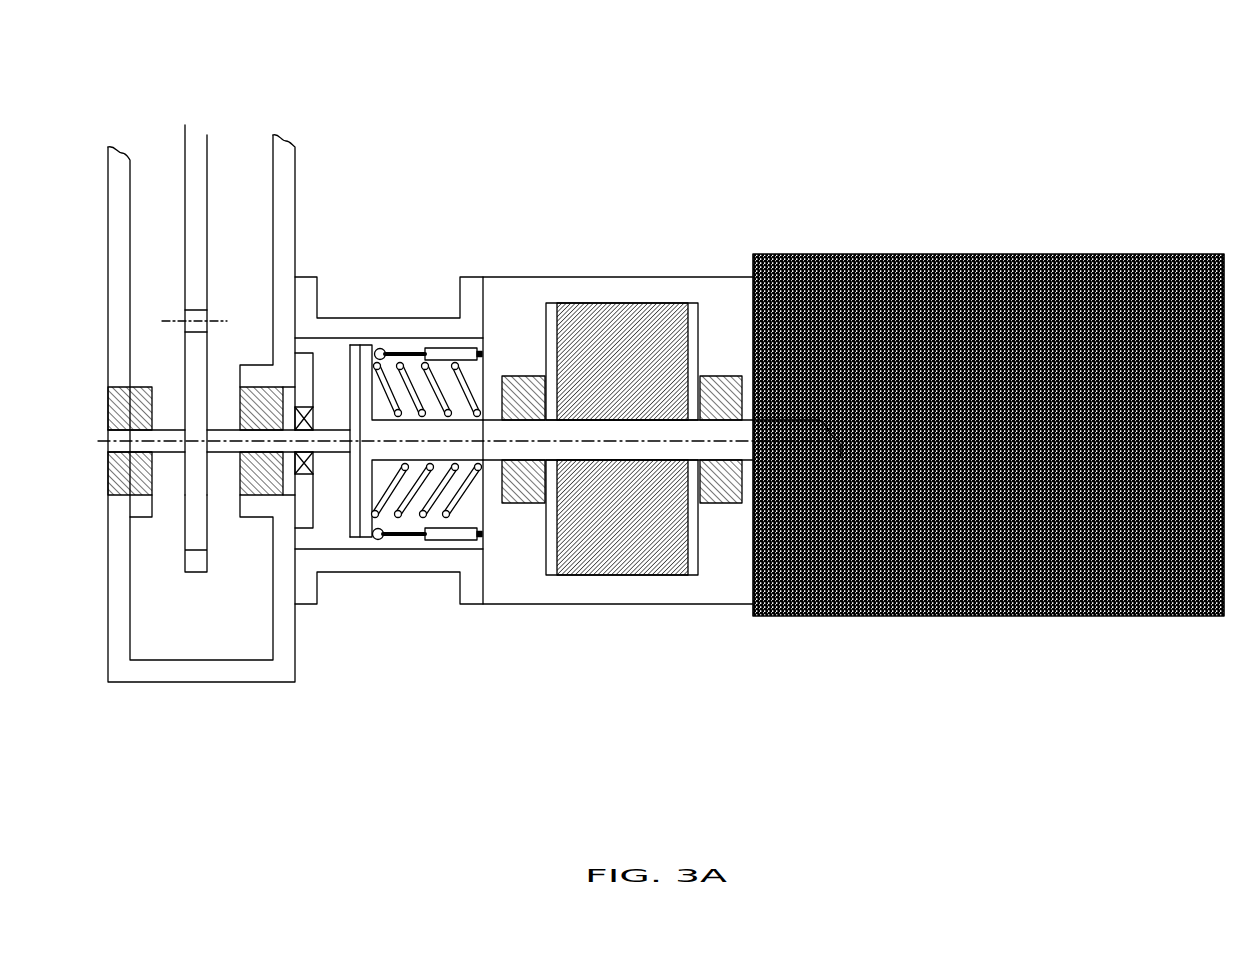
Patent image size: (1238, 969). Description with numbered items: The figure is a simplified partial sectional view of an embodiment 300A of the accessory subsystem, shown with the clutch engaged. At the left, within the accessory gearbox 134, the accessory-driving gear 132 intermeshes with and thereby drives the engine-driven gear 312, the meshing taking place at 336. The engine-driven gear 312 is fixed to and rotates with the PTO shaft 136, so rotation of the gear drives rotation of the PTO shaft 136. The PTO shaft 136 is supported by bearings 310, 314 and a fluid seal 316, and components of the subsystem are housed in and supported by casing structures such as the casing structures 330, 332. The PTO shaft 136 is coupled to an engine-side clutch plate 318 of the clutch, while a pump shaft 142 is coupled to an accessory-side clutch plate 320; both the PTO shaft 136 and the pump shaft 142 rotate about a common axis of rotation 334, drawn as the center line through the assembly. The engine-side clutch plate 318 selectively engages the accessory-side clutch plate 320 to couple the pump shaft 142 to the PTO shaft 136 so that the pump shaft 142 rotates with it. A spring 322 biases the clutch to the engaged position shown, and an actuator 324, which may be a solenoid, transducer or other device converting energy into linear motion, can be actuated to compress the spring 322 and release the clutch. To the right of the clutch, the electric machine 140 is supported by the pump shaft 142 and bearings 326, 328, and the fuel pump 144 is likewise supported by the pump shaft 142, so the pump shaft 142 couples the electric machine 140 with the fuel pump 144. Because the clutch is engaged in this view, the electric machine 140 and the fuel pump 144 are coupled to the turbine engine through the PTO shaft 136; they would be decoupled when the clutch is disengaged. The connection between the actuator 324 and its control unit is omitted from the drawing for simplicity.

The embodiment of the accessory subsystem 300A is at (128, 70).
The accessory-driving gear 132 is at (207, 201).
The accessory gearbox 134 is at (190, 682).
The PTO shaft 136 is at (228, 448).
The electric machine 140 is at (603, 297).
The pump shaft 142 is at (771, 419).
The fuel pump 144 is at (945, 256).
The bearing 310 is at (148, 412).
The engine-driven gear 312 is at (183, 523).
The bearing 314 is at (267, 405).
The fluid seal 316 is at (308, 407).
The engine-side clutch plate 318 is at (352, 533).
The accessory-side clutch plate 320 is at (367, 537).
The spring 322 is at (472, 507).
The actuator 324 is at (388, 348).
The bearing 326 is at (517, 376).
The bearing 328 is at (710, 376).
The casing structure 330 is at (350, 318).
The casing structure 332 is at (682, 278).
The common axis of rotation 334 is at (857, 440).
The gear mesh location 336 is at (210, 323).